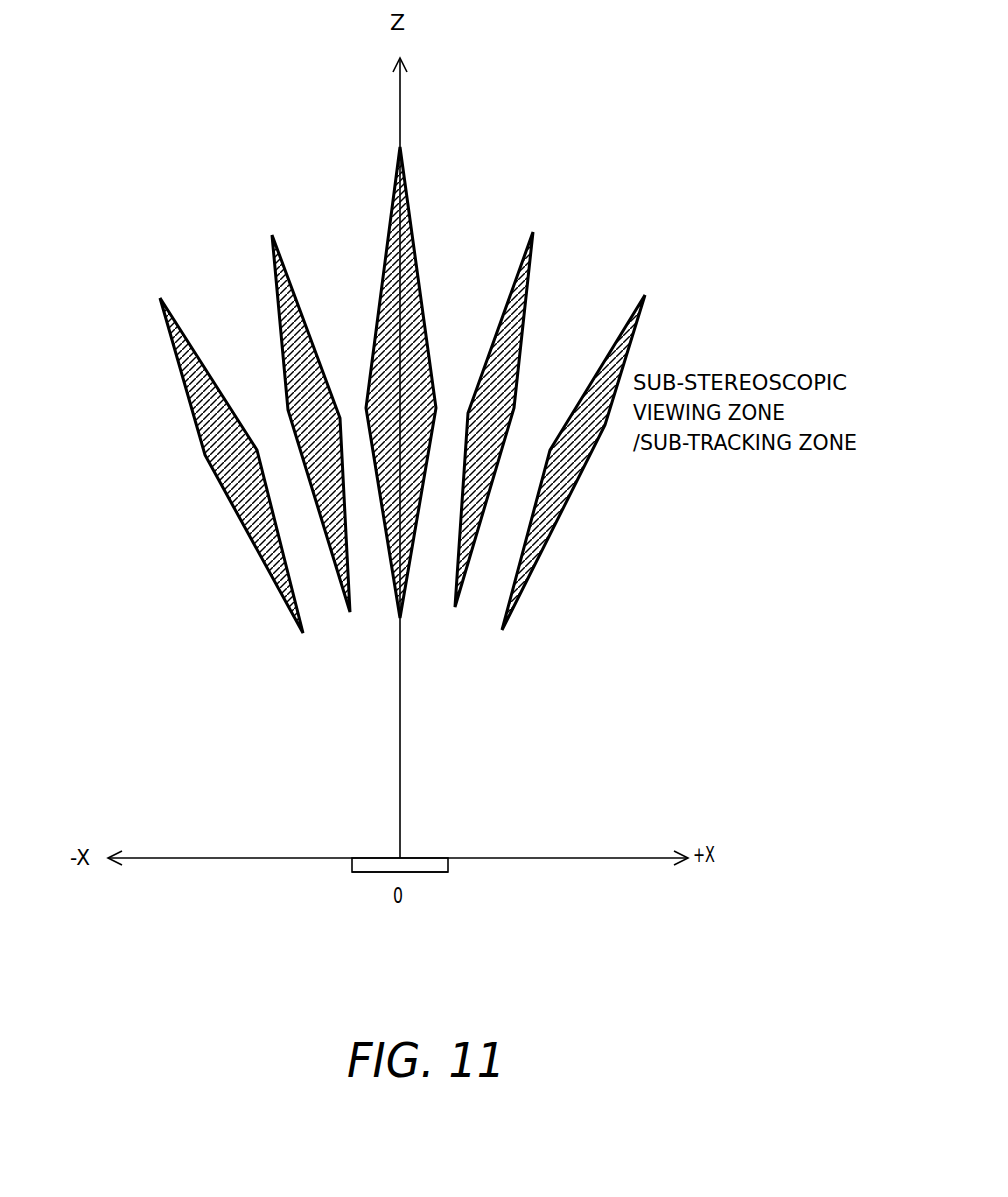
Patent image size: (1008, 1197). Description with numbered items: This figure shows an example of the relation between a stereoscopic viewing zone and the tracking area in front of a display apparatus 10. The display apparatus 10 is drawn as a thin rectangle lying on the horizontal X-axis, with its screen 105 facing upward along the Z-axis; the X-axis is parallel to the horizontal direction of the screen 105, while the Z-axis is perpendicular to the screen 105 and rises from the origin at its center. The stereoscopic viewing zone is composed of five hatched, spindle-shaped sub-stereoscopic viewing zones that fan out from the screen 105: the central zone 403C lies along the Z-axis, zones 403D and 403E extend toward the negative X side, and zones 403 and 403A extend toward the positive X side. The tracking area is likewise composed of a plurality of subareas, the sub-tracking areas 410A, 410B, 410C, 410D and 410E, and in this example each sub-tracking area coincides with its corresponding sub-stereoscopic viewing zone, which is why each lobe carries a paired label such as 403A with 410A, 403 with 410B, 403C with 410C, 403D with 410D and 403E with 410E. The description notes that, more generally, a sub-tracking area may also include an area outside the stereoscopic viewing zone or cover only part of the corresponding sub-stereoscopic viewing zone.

The sub-stereoscopic viewing zone 403A is at (648, 462).
The sub-tracking area 410A is at (633, 345).
The sub-stereoscopic viewing zone 403 is at (571, 401).
The sub-tracking area 410B is at (535, 265).
The sub-stereoscopic viewing zone 403C is at (478, 376).
The sub-tracking area 410C is at (408, 195).
The sub-stereoscopic viewing zone 403D is at (255, 398).
The sub-tracking area 410D is at (269, 262).
The sub-stereoscopic viewing zone 403E is at (184, 465).
The sub-tracking area 410E is at (205, 452).
The screen 105 is at (373, 857).
The display apparatus 10 is at (447, 872).